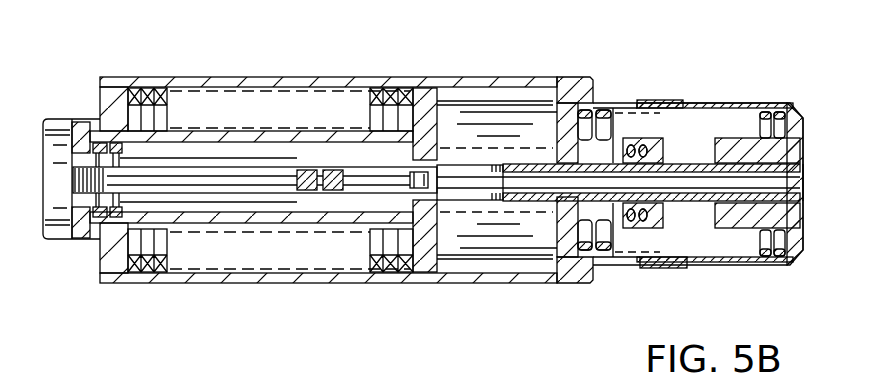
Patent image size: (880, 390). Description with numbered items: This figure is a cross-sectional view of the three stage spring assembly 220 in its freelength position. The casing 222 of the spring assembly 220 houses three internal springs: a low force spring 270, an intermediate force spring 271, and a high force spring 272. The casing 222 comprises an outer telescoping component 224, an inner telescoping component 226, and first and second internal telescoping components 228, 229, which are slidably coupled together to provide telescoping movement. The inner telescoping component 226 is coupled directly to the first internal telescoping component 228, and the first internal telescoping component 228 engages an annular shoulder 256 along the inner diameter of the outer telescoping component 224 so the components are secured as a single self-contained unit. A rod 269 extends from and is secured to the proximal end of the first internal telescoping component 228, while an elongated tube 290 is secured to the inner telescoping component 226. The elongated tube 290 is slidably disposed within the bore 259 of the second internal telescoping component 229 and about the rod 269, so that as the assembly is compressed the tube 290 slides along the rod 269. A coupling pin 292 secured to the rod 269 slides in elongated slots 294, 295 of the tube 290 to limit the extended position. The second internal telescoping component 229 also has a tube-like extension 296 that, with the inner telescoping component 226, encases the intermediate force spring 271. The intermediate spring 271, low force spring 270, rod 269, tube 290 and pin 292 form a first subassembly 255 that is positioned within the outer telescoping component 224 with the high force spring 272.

The three stage spring assembly 220 is at (109, 318).
The casing 222 is at (215, 77).
The outer telescoping component 224 is at (252, 77).
The inner telescoping component 226 is at (770, 103).
The first internal telescoping component 228 is at (425, 95).
The second internal telescoping component 229 is at (549, 190).
The first subassembly 255 is at (650, 274).
The annular shoulder 256 is at (438, 100).
The bore 259 is at (668, 158).
The rod 269 is at (190, 176).
The low force spring 270 is at (616, 128).
The intermediate force spring 271 is at (769, 257).
The high force spring 272 is at (400, 266).
The elongated tube 290 is at (549, 190).
The coupling pin 292 is at (320, 165).
The elongated slot 294 is at (467, 165).
The elongated slot 295 is at (467, 165).
The tube-like extension 296 is at (640, 103).